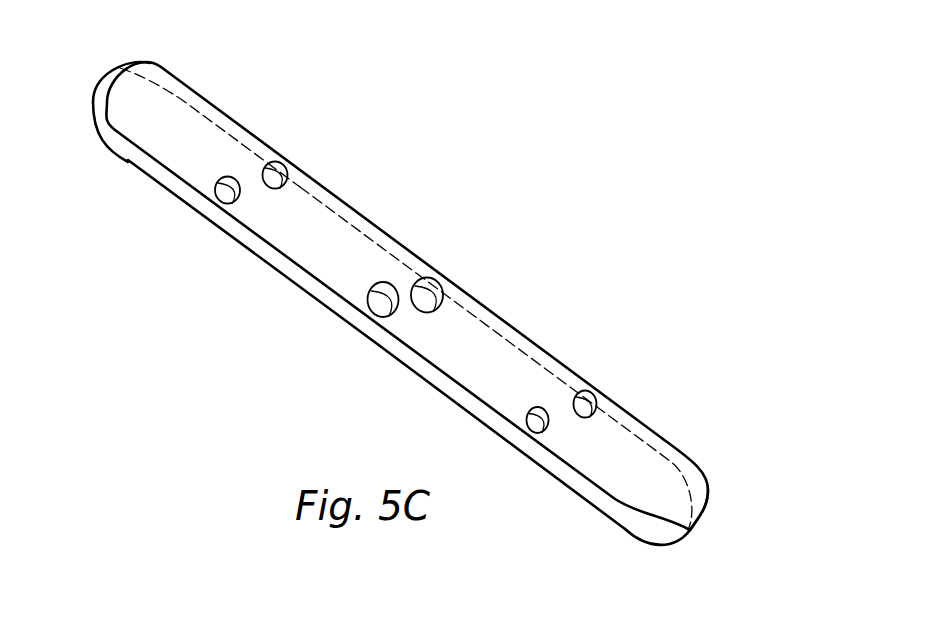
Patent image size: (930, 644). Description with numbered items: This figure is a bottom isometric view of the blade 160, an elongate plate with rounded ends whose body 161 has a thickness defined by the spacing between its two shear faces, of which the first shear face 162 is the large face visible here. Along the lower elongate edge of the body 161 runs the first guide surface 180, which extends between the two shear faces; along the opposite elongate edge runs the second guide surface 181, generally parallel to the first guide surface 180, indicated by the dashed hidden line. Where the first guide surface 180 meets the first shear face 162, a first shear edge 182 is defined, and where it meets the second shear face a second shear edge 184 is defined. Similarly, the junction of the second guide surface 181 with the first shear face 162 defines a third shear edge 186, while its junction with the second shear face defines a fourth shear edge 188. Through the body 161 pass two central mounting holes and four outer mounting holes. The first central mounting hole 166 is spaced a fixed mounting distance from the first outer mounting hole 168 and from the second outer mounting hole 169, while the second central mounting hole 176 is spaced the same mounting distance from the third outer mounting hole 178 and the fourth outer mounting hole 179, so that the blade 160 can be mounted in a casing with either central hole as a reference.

The blade 160 is at (703, 503).
The body 161 is at (133, 114).
The first shear face 162 is at (666, 497).
The first central mounting hole 166 is at (445, 291).
The first outer mounting hole 168 is at (296, 170).
The second outer mounting hole 169 is at (606, 404).
The second central mounting hole 176 is at (400, 317).
The third outer mounting hole 178 is at (239, 177).
The fourth outer mounting hole 179 is at (558, 428).
The first guide surface 180 is at (372, 334).
The second guide surface 181 is at (341, 214).
The first shear edge 182 is at (293, 252).
The second shear edge 184 is at (250, 252).
The third shear edge 186 is at (207, 103).
The fourth shear edge 188 is at (238, 134).